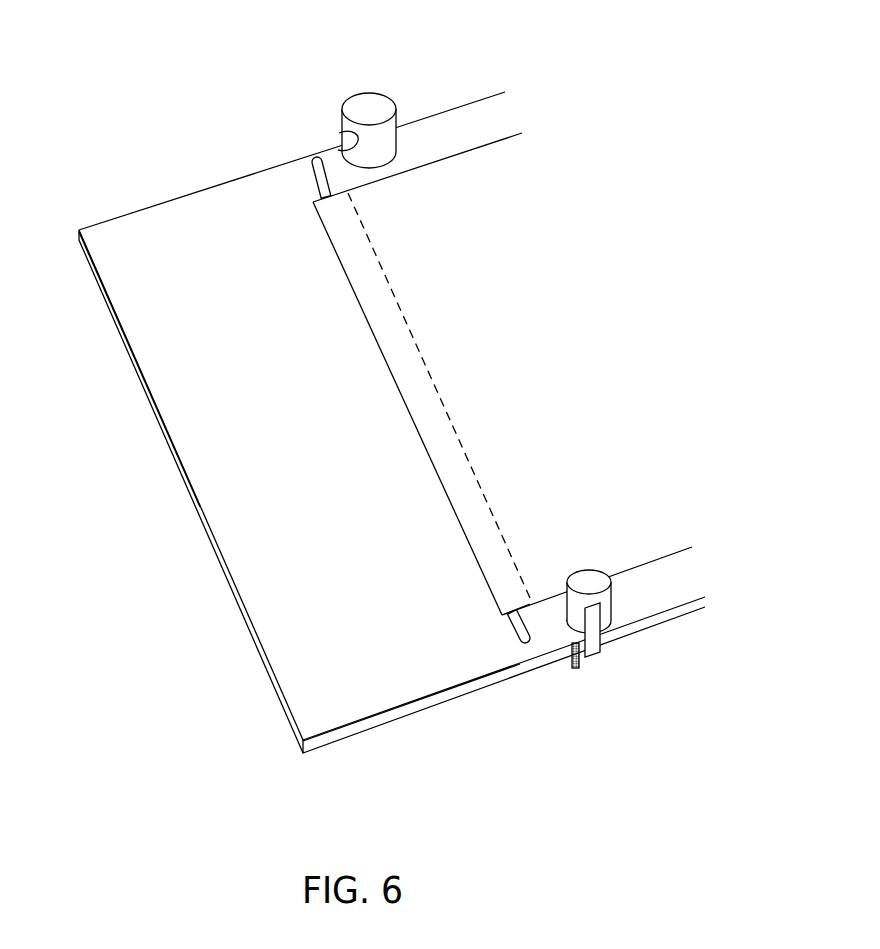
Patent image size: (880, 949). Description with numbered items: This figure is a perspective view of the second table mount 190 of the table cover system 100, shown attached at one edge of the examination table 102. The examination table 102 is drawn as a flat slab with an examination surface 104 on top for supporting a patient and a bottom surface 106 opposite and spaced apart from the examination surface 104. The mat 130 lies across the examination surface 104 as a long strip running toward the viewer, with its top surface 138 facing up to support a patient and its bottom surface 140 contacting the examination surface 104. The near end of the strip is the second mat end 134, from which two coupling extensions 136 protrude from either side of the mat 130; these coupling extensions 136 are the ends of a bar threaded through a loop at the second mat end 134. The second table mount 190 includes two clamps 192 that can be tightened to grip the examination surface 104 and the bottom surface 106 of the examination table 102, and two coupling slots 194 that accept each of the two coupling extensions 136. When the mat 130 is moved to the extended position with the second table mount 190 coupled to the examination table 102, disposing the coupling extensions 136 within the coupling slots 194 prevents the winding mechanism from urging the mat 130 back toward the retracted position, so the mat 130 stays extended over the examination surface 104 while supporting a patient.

The table cover system 100 is at (128, 102).
The examination table 102 is at (158, 563).
The examination surface 104 is at (182, 381).
The bottom surface 106 is at (422, 713).
The mat 130 is at (361, 412).
The second mat end 134 is at (400, 410).
The coupling extensions 136 is at (430, 247).
The top surface 138 is at (477, 177).
The bottom surface 140 is at (673, 557).
The second table mount 190 is at (472, 371).
The clamps 192 is at (620, 600).
The coupling slots 194 is at (335, 135).